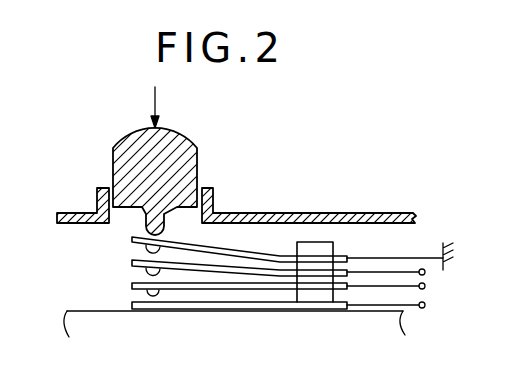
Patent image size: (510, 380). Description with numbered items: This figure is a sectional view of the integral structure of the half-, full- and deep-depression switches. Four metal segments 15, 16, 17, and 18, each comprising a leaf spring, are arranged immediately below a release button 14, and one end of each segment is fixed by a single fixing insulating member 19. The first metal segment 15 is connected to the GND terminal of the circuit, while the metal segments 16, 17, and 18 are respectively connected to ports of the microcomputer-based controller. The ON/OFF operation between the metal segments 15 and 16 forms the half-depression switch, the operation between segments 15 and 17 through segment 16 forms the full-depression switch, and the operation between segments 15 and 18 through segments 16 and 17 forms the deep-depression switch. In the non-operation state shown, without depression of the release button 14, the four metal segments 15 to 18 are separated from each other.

The release button 14 is at (119, 143).
The first metal segment 15 is at (132, 238).
The metal segment 16 is at (132, 262).
The metal segment 17 is at (132, 285).
The metal segment 18 is at (132, 304).
The fixing insulating member 19 is at (330, 250).